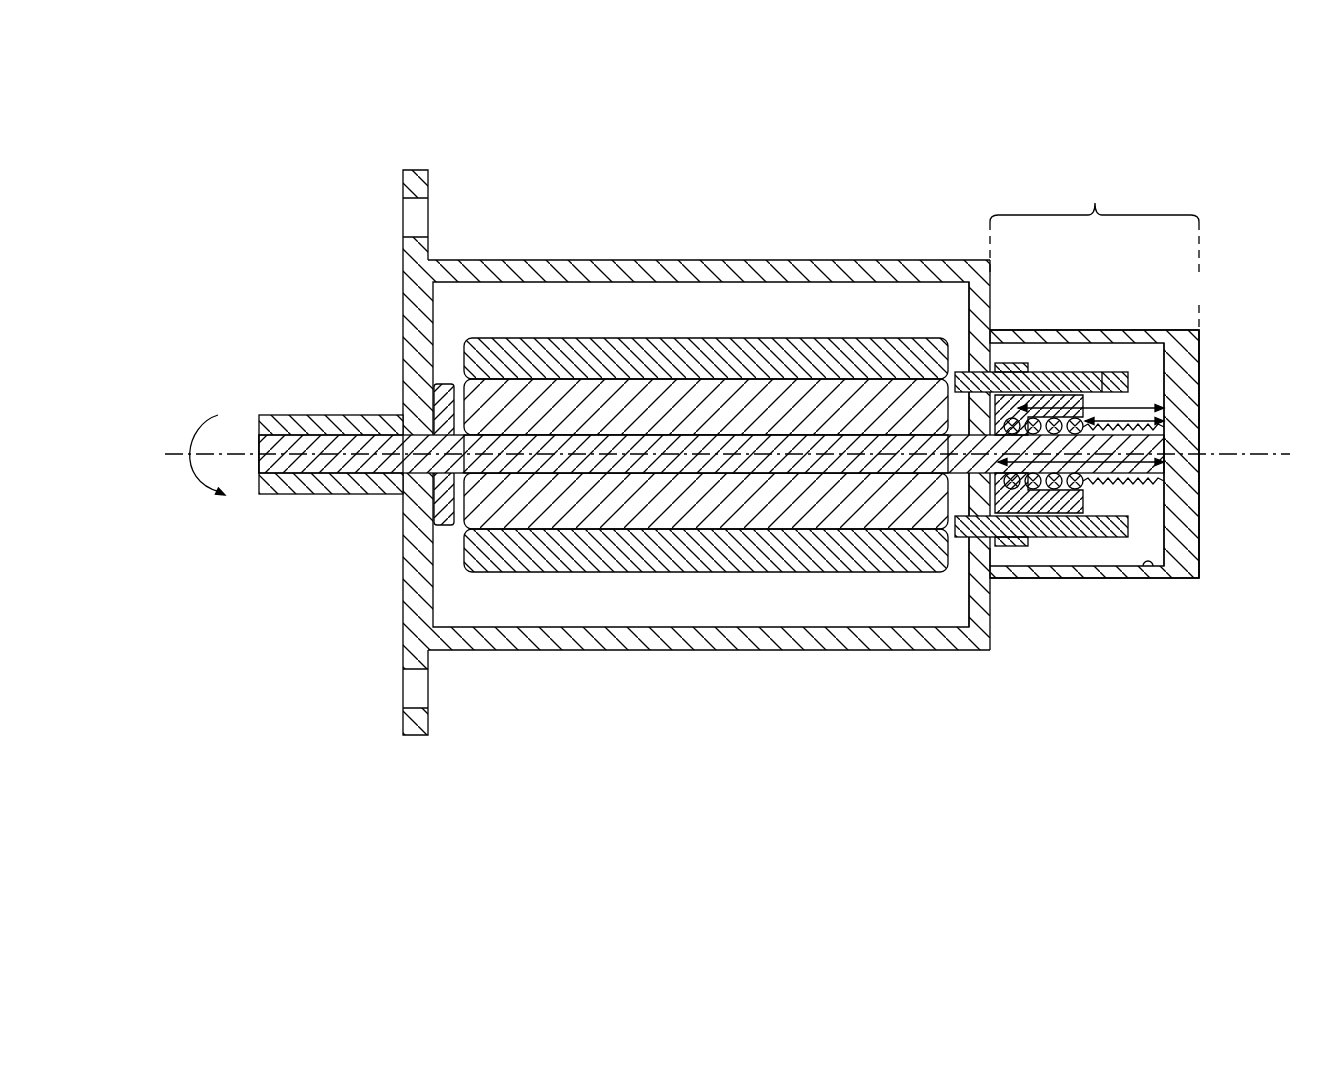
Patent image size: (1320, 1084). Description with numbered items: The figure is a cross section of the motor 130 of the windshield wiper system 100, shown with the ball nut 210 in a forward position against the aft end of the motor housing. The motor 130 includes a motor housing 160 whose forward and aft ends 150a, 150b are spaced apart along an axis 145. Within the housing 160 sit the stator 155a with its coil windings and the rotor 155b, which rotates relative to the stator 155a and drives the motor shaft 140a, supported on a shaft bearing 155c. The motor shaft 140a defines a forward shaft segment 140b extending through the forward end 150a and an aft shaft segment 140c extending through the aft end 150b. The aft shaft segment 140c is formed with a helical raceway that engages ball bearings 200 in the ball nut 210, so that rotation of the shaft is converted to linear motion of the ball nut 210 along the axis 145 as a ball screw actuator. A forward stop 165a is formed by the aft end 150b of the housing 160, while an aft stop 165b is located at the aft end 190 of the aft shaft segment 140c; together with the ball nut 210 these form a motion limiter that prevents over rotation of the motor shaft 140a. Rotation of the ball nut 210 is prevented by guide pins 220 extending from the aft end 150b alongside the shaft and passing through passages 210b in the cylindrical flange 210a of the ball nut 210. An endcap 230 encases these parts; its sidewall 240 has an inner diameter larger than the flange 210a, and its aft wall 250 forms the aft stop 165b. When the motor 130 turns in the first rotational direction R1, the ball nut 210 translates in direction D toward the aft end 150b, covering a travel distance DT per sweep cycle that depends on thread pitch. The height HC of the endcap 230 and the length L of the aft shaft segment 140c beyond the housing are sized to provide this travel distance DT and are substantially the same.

The windshield wiper system 100 is at (1205, 130).
The motor 130 is at (313, 805).
The motor shaft 140a is at (378, 462).
The forward shaft segment 140b is at (288, 476).
The aft shaft segment 140c is at (907, 512).
The axis 145 is at (302, 452).
The forward end 150a is at (443, 652).
The aft end 150b is at (982, 652).
The stator 155a is at (822, 352).
The rotor 155b is at (704, 395).
The shaft bearing 155c is at (447, 384).
The motor housing 160 is at (621, 260).
The forward stop 165a is at (994, 562).
The aft stop 165b is at (1148, 568).
The aft end of the aft shaft segment 190 is at (1173, 458).
The ball bearings 200 is at (1086, 484).
The ball nut 210 is at (1098, 395).
The flange 210a is at (1020, 547).
The passages 210b is at (1030, 542).
The guide pins 220 is at (1001, 362).
The endcap 230 is at (1200, 530).
The sidewall 240 is at (1148, 404).
The aft wall 250 is at (1200, 407).
The first rotational direction R1 is at (186, 445).
The direction of translation D is at (1137, 405).
The travel distance DT is at (1160, 418).
The height of the endcap HC is at (1094, 246).
The length of the aft shaft segment L is at (1200, 525).